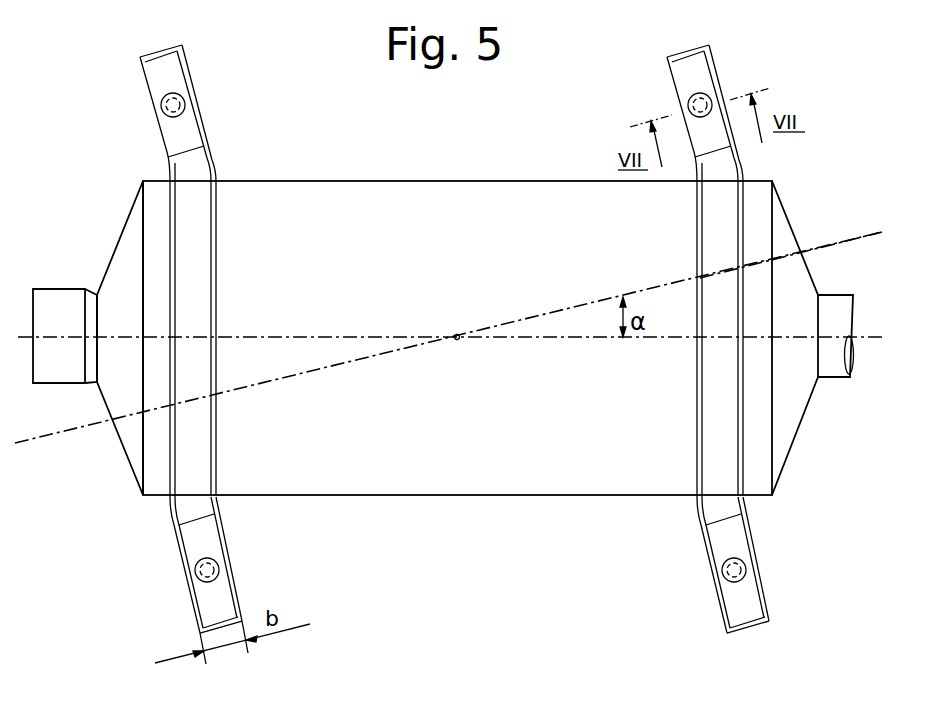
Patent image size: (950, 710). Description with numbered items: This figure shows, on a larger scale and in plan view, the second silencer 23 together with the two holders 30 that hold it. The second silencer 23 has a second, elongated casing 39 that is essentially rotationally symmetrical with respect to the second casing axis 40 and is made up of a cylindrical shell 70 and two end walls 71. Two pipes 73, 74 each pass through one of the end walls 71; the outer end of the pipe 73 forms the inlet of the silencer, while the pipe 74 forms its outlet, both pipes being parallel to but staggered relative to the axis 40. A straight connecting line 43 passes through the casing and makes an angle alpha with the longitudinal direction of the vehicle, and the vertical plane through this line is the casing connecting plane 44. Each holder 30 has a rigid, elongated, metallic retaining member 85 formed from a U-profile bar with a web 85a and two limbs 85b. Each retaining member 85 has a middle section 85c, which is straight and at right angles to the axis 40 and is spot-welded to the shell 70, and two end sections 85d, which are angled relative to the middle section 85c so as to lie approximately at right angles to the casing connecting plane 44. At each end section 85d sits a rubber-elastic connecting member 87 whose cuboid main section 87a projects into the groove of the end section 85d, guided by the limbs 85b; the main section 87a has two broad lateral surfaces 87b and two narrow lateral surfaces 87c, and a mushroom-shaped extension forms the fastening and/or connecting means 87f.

The second silencer 23 is at (144, 181).
The holder 30 is at (412, 331).
The second casing 39 is at (116, 248).
The second casing axis 40 is at (593, 338).
The straight connecting line 43 is at (571, 309).
The casing connecting plane 44 is at (661, 288).
The cylindrical shell 70 is at (389, 181).
The end wall 71 is at (104, 278).
The pipe 73 is at (50, 289).
The pipe 74 is at (832, 297).
The retaining member 85 is at (239, 330).
The web 85a is at (193, 265).
The limb 85b is at (176, 305).
The middle section 85c is at (217, 453).
The end section 85d is at (191, 79).
The connecting member 87 is at (423, 331).
The main section 87a is at (172, 148).
The broad lateral surface 87b is at (160, 133).
The narrow lateral surface 87c is at (149, 56).
The fastening and/or connecting means 87f is at (186, 115).